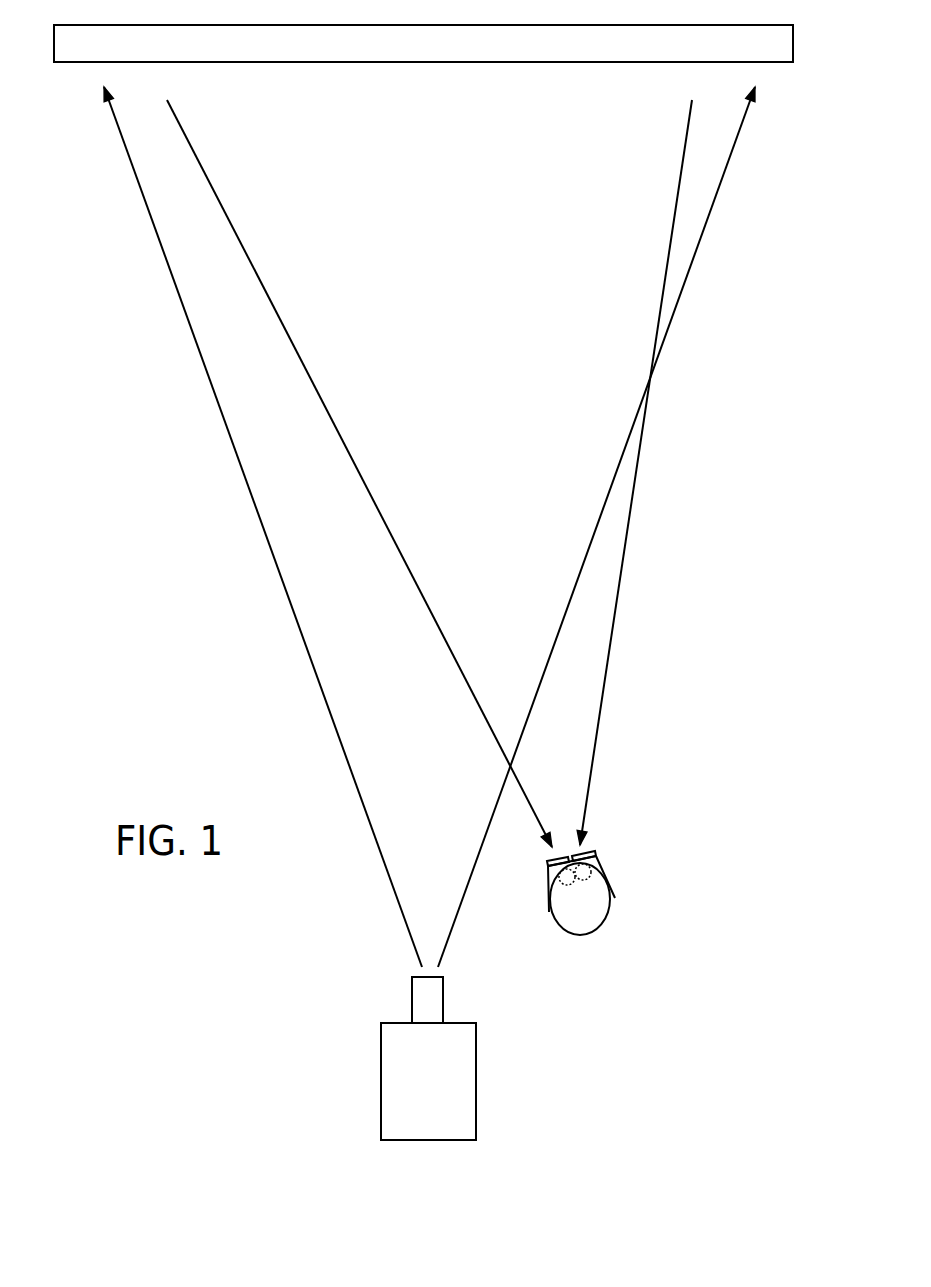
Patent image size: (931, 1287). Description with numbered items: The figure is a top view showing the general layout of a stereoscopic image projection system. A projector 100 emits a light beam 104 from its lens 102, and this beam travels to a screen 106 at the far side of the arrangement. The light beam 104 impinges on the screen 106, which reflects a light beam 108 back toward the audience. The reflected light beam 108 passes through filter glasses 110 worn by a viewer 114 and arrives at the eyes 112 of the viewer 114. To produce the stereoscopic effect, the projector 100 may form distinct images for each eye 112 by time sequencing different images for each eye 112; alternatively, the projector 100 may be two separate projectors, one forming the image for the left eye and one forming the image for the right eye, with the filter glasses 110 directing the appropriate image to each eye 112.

The projector 100 is at (380, 1082).
The lens 102 is at (412, 1000).
The light beam 104 is at (325, 708).
The screen 106 is at (424, 62).
The light beam 108 is at (412, 578).
The filter glasses 110 is at (588, 850).
The eyes 112 is at (567, 885).
The viewer 114 is at (585, 933).